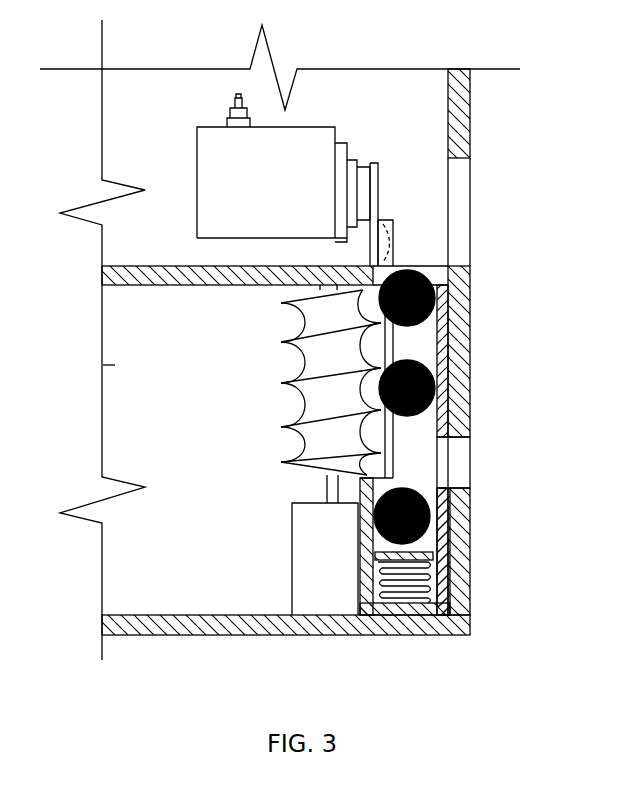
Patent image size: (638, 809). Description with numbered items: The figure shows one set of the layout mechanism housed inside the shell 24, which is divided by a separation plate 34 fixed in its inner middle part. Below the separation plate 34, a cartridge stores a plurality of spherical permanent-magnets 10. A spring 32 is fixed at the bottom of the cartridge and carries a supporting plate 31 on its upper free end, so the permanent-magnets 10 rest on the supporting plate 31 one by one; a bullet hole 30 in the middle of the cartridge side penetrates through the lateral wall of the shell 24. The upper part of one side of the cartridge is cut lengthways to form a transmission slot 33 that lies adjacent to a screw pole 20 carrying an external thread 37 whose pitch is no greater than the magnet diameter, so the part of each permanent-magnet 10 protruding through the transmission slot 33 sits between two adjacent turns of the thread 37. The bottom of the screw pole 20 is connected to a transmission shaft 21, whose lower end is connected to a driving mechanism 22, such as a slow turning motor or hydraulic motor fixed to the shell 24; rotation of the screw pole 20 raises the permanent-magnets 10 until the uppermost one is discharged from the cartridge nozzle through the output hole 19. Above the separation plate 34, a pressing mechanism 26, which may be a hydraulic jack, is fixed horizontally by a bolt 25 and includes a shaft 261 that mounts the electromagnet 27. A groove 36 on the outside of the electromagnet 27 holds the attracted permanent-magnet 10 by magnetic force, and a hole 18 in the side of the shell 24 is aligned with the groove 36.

The permanent-magnet 10 is at (433, 513).
The hole 18 is at (470, 167).
The output hole 19 is at (422, 268).
The screw pole 20 is at (327, 402).
The transmission shaft 21 is at (295, 485).
The driving mechanism 22 is at (292, 540).
The shell 24 is at (470, 307).
The bolt 25 is at (248, 108).
The pressing mechanism 26 is at (240, 163).
The shaft 261 is at (350, 160).
The electromagnet 27 is at (240, 235).
The bullet hole 30 is at (445, 457).
The supporting plate 31 is at (442, 548).
The spring 32 is at (430, 587).
The transmission slot 33 is at (393, 460).
The separation plate 34 is at (157, 275).
The groove 36 is at (390, 243).
The thread 37 is at (281, 383).